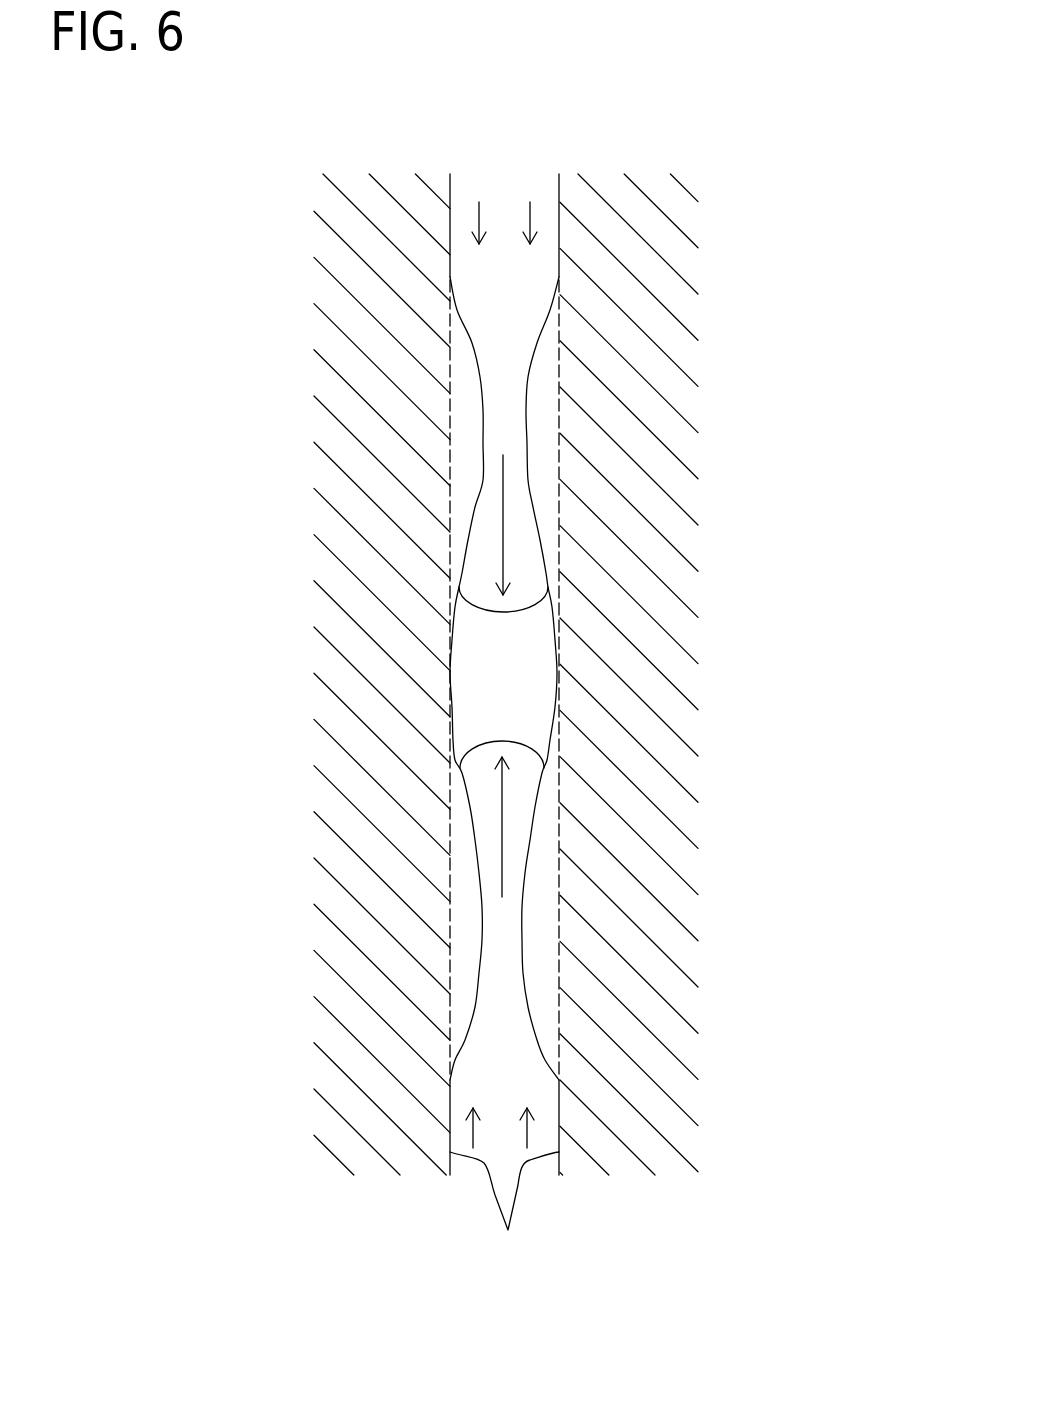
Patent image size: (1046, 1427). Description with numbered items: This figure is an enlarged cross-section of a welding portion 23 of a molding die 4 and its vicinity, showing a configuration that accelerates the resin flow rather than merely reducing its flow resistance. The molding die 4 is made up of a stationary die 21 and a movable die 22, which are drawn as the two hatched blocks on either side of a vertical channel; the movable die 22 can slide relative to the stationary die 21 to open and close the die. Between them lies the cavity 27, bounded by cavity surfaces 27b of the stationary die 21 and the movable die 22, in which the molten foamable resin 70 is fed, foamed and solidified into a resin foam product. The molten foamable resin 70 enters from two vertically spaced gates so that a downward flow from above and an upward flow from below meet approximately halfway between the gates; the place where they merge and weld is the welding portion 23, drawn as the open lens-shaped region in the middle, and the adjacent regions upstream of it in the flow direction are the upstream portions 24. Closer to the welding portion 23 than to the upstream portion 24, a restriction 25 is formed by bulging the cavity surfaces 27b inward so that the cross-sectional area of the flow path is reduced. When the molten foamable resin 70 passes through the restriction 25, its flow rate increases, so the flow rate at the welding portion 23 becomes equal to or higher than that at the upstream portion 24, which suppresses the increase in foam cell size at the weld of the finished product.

The molding die 4 is at (507, 747).
The stationary die 21 is at (613, 1197).
The movable die 22 is at (378, 1197).
The welding portion 23 is at (422, 692).
The upstream portion 24 is at (423, 283).
The restriction 25 is at (507, 407).
The cavity 27 is at (505, 188).
The cavity surfaces 27b is at (504, 1216).
The molten foamable resin 70 is at (543, 218).